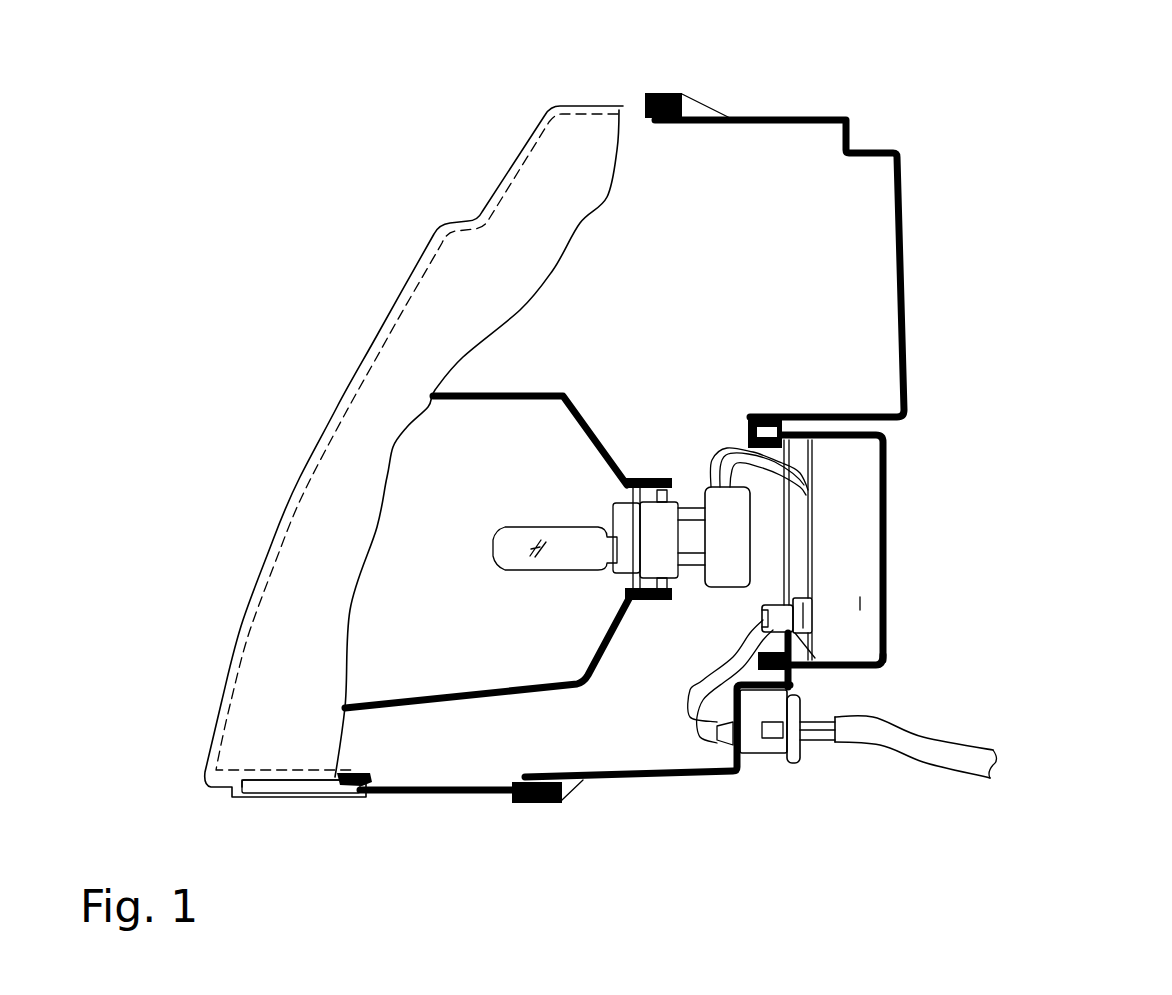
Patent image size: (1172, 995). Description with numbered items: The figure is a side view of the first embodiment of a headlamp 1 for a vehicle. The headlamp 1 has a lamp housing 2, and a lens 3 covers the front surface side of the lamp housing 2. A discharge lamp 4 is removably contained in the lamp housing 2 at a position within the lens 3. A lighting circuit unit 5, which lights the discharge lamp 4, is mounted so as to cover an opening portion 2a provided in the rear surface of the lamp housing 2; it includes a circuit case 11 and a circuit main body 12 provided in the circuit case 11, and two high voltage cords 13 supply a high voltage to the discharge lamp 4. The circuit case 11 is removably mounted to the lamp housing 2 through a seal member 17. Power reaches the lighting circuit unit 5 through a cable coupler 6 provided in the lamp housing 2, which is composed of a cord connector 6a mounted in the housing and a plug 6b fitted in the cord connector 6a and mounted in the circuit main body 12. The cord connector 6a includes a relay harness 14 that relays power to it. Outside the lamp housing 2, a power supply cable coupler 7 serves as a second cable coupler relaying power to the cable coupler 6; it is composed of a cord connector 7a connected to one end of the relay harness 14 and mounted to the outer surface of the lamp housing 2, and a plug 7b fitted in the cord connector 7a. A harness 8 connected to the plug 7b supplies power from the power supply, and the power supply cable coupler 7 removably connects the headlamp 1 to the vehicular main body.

The headlamp 1 is at (264, 157).
The lamp housing 2 is at (900, 201).
The opening portion 2a is at (773, 594).
The lens 3 is at (337, 407).
The discharge lamp 4 is at (527, 527).
The lighting circuit unit 5 is at (902, 502).
The cable coupler 6 is at (806, 586).
The cord connector 6a is at (803, 658).
The plug 6b is at (812, 630).
The power supply cable coupler 7 is at (772, 777).
The cord connector 7a is at (753, 753).
The plug 7b is at (803, 758).
The harness 8 is at (957, 741).
The circuit case 11 is at (905, 642).
The circuit main body 12 is at (860, 603).
The high voltage cords 13 is at (727, 448).
The relay harness 14 is at (693, 680).
The seal member 17 is at (768, 428).